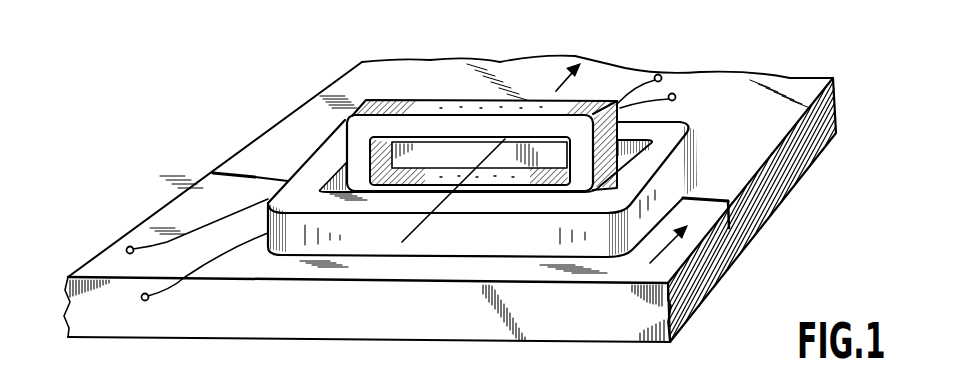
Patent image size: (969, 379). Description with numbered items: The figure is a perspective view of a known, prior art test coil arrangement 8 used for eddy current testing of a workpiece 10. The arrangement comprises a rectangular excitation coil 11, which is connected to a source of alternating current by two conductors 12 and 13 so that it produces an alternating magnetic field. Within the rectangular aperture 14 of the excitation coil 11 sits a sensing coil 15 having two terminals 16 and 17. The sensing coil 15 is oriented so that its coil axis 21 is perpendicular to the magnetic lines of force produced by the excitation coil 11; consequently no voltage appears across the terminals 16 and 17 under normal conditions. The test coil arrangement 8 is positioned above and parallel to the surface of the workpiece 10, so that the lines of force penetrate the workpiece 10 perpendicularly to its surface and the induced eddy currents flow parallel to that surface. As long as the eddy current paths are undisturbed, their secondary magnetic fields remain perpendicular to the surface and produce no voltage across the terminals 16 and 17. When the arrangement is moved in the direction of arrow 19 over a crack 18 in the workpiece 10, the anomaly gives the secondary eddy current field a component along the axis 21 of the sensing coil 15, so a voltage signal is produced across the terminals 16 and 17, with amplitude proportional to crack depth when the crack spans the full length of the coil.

The test coil arrangement 8 is at (373, 88).
The workpiece 10 is at (757, 215).
The excitation coil 11 is at (367, 244).
The conductor 12 is at (165, 242).
The conductor 13 is at (160, 292).
The rectangular aperture 14 is at (330, 175).
The sensing coil 15 is at (410, 108).
The terminal 16 is at (656, 75).
The terminal 17 is at (675, 98).
The crack 18 is at (256, 174).
The arrow 19 is at (652, 262).
The coil axis 21 is at (546, 100).